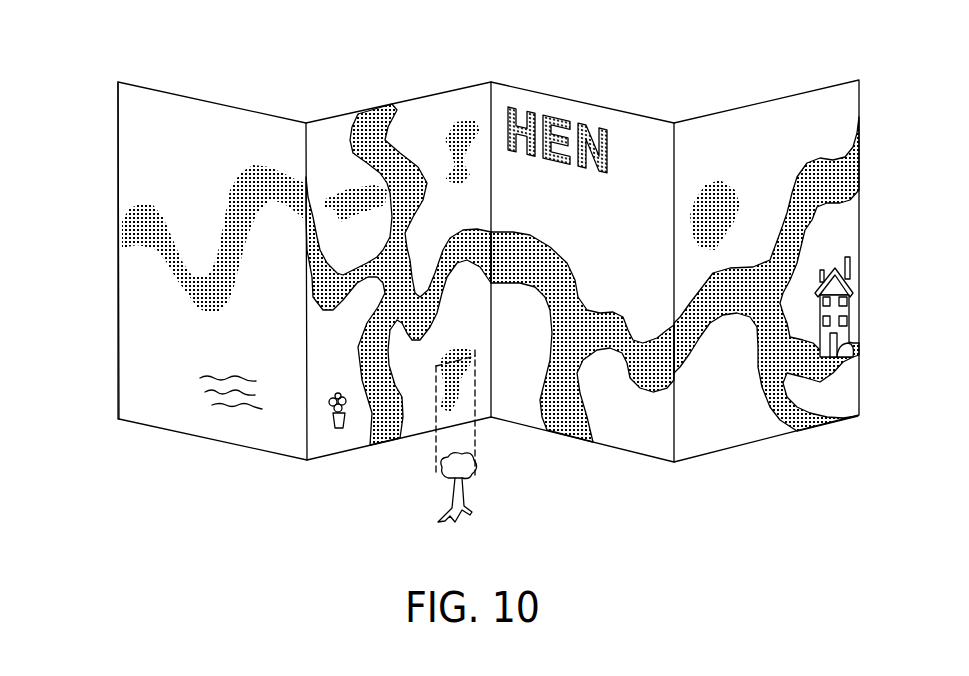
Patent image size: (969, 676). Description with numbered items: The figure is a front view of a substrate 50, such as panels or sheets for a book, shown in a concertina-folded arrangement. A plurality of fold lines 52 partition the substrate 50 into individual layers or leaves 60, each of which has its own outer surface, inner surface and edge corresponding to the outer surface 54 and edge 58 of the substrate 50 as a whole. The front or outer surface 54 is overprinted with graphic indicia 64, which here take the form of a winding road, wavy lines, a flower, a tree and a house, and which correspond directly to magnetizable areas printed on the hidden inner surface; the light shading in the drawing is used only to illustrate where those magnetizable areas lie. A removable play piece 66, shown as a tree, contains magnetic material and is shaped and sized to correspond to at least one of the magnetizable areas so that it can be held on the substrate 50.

The substrate 50 is at (862, 132).
The fold lines 52 is at (327, 140).
The outer surface 54 is at (155, 388).
The edge 58 is at (117, 157).
The layers 60 is at (205, 118).
The graphic indicia 64 is at (235, 408).
The removable play pieces 66 is at (478, 490).